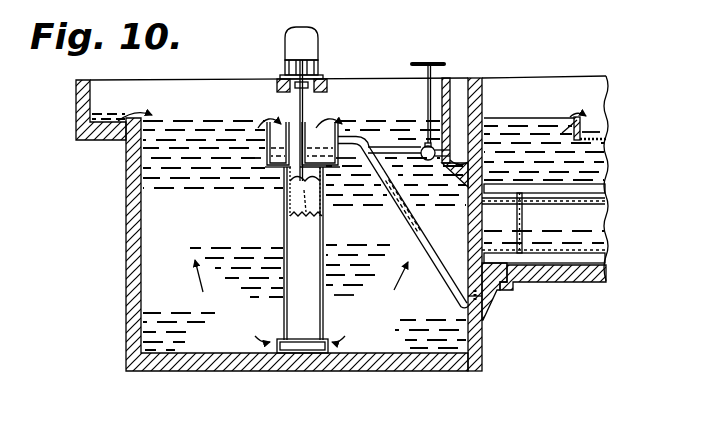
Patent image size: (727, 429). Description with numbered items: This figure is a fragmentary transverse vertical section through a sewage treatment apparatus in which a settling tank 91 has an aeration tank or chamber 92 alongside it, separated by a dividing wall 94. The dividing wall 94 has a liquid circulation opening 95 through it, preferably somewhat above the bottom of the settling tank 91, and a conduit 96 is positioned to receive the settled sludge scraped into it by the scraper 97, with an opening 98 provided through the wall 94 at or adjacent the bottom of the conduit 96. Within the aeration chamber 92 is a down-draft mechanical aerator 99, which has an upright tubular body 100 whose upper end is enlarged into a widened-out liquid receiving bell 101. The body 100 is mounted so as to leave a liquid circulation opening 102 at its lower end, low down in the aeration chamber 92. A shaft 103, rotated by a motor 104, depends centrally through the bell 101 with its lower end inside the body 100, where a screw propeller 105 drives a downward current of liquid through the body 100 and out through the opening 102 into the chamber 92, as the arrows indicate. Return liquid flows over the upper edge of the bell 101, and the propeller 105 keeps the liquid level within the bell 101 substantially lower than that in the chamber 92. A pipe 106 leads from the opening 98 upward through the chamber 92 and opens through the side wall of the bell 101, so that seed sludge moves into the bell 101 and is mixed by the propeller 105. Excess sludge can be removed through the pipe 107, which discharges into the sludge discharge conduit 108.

The settling tank 91 is at (536, 124).
The aeration tank 92 is at (162, 123).
The dividing wall 94 is at (482, 99).
The liquid circulation opening 95 is at (469, 224).
The conduit 96 is at (490, 300).
The scraper 97 is at (598, 188).
The opening 98 is at (479, 301).
The down-draft mechanical aerator 99 is at (283, 239).
The upright tubular body 100 is at (312, 232).
The liquid receiving bell 101 is at (318, 126).
The liquid circulation opening 102 is at (323, 345).
The shaft 103 is at (299, 104).
The motor 104 is at (318, 48).
The screw propeller 105 is at (292, 197).
The pipe 106 is at (436, 256).
The pipe 107 is at (404, 152).
The sludge discharge conduit 108 is at (453, 97).